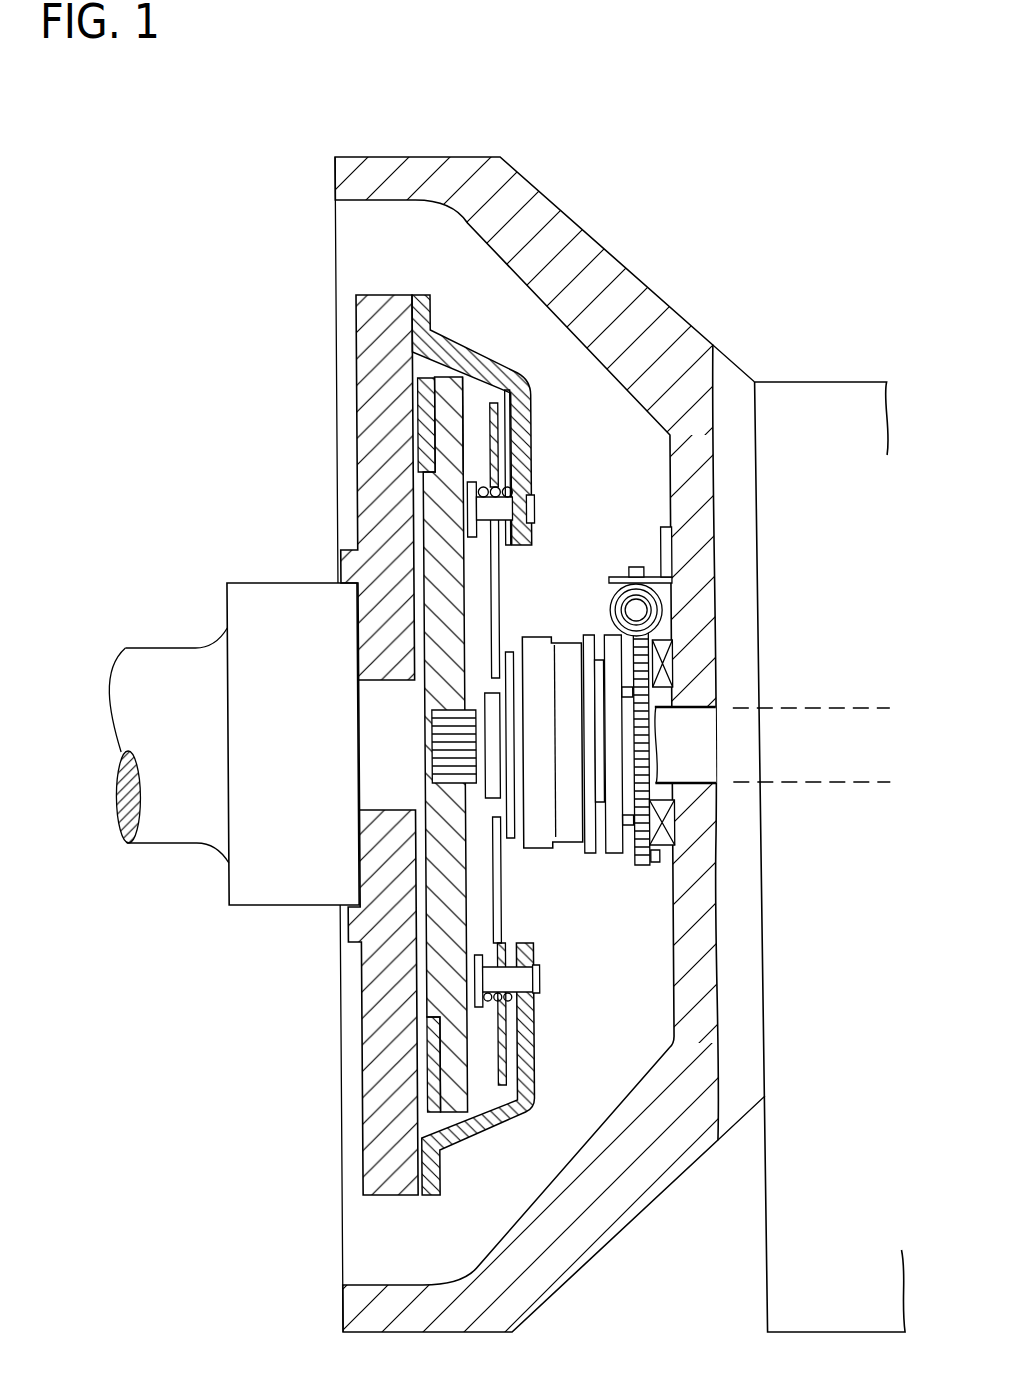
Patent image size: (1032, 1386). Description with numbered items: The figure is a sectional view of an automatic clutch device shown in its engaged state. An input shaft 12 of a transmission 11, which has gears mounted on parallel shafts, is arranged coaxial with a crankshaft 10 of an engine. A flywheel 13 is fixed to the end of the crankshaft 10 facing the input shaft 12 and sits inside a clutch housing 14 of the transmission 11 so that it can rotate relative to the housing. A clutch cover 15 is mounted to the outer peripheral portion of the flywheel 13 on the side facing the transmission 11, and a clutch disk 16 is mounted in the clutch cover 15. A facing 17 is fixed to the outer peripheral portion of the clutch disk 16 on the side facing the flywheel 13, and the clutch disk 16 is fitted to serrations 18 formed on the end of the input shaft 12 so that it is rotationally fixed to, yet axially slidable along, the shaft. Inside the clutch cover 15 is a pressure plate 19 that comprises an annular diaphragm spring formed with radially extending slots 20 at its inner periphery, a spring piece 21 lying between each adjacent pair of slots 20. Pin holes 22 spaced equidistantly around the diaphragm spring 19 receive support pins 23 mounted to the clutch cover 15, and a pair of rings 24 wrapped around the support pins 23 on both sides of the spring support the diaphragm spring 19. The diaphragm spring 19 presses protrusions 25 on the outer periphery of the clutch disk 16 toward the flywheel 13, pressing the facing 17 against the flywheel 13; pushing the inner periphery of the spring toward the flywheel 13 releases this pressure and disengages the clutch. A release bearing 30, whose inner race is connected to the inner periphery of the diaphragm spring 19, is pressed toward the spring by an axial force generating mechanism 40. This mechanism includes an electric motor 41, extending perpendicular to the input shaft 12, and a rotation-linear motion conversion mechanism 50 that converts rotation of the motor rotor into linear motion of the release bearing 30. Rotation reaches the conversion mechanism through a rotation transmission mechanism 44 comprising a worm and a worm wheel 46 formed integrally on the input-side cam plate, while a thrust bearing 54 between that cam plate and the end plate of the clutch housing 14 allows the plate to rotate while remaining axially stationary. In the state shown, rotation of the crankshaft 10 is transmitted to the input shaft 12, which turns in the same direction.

The crankshaft 10 is at (151, 657).
The transmission 11 is at (816, 384).
The input shaft 12 is at (703, 745).
The flywheel 13 is at (365, 313).
The clutch housing 14 is at (360, 172).
The clutch cover 15 is at (464, 353).
The clutch disk 16 is at (441, 483).
The facing 17 is at (425, 395).
The serrations 18 is at (440, 723).
The pressure plate 19 is at (500, 438).
The slots 20 is at (503, 572).
The spring piece 21 is at (506, 612).
The pin holes 22 is at (537, 507).
The support pins 23 is at (511, 487).
The rings 24 is at (512, 1021).
The protrusions 25 is at (476, 424).
The release bearing 30 is at (563, 846).
The axial force generating mechanism 40 is at (670, 594).
The electric motor 41 is at (664, 614).
The rotation transmission mechanism 44 is at (677, 858).
The worm wheel 46 is at (680, 810).
The rotation-linear motion conversion mechanism 50 is at (652, 858).
The thrust bearing 54 is at (668, 663).